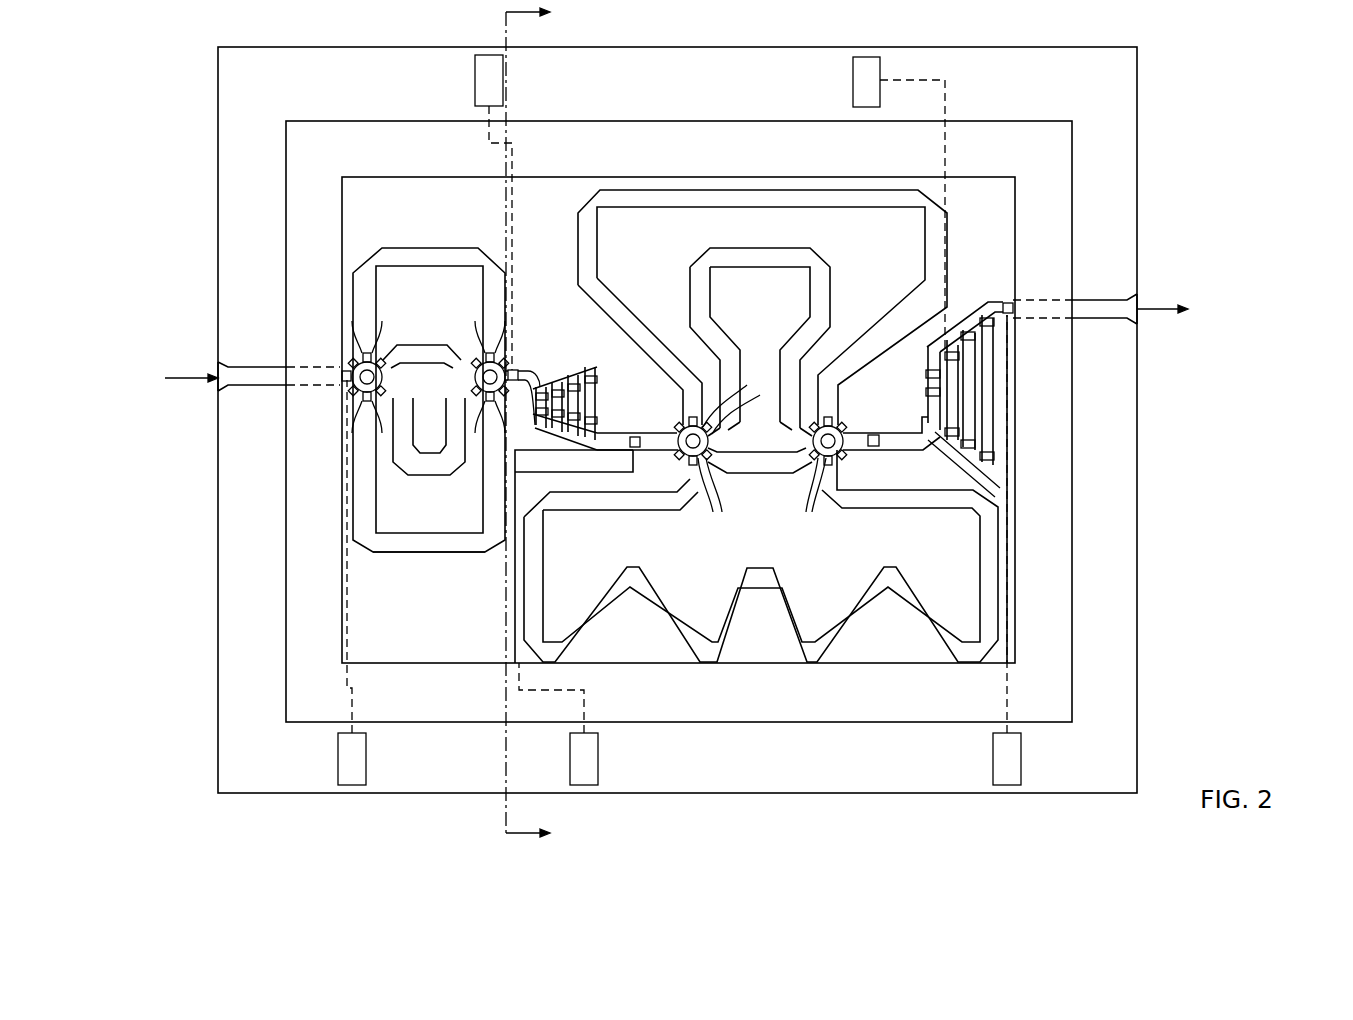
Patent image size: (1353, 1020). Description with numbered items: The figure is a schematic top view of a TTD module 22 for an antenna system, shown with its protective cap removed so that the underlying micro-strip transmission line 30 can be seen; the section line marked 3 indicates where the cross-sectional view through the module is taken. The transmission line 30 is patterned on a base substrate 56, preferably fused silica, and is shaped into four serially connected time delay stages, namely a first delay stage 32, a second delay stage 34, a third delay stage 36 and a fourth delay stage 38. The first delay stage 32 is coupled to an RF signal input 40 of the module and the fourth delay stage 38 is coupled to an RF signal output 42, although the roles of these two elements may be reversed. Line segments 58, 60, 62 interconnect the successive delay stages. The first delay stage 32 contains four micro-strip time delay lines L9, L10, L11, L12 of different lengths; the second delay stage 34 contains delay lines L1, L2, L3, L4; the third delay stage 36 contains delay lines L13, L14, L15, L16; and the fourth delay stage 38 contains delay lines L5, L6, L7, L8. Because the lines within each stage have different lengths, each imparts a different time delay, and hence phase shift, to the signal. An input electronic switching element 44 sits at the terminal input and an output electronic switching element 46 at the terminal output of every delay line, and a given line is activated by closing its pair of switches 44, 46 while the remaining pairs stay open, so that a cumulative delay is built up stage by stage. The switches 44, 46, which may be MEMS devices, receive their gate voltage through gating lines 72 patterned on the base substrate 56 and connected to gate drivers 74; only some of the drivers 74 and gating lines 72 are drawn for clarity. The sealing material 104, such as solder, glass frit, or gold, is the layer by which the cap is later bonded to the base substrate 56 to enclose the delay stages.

The TTD module 22 is at (216, 98).
The base substrate 56 is at (250, 238).
The sealing material 104 is at (1003, 118).
The gating lines 72 is at (508, 203).
The gate drivers 74 is at (475, 85).
The section line 3 is at (539, 424).
The RF signal input 40 is at (221, 390).
The RF signal output 42 is at (1157, 312).
The micro-strip transmission line 30 is at (258, 366).
The first delay stage 32 is at (429, 396).
The second delay stage 34 is at (586, 363).
The third delay stage 36 is at (734, 283).
The fourth delay stage 38 is at (949, 442).
The input electronic switching element 44 is at (358, 340).
The output electronic switching element 46 is at (486, 355).
The line segment 58 is at (515, 368).
The line segment 60 is at (653, 473).
The line segment 62 is at (903, 452).
The micro-strip time delay line L1 is at (537, 420).
The micro-strip time delay line L2 is at (575, 400).
The micro-strip time delay line L3 is at (600, 400).
The micro-strip time delay line L4 is at (598, 407).
The micro-strip time delay line L5 is at (928, 405).
The micro-strip time delay line L6 is at (965, 420).
The micro-strip time delay line L7 is at (975, 390).
The micro-strip time delay line L8 is at (990, 360).
The micro-strip time delay line L9 is at (415, 345).
The micro-strip time delay line L10 is at (410, 462).
The micro-strip time delay line L11 is at (412, 248).
The micro-strip time delay line L12 is at (428, 553).
The micro-strip time delay line L13 is at (762, 475).
The micro-strip time delay line L14 is at (823, 248).
The micro-strip time delay line L15 is at (904, 210).
The micro-strip time delay line L16 is at (620, 510).